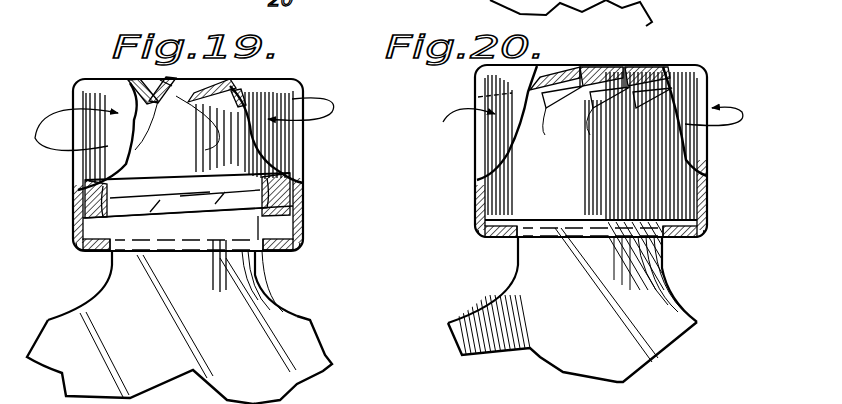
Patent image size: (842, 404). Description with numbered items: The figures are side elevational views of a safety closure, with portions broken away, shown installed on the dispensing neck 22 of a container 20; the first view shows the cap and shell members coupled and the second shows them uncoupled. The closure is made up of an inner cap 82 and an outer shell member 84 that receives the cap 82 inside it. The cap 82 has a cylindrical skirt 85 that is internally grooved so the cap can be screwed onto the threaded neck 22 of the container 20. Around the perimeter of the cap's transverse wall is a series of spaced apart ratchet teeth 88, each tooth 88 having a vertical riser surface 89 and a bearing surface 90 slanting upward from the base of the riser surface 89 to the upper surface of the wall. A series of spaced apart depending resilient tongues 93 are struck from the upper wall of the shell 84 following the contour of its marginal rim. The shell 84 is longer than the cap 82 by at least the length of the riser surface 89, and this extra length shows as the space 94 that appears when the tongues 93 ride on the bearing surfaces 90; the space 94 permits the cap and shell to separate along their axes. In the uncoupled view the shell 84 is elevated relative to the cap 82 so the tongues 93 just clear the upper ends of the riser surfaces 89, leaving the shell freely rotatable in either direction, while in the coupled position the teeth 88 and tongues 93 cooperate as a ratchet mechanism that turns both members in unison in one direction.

In FIG. 19, the container 20 is at (305, 367).
In FIG. 20, the container 20 is at (660, 334).
In FIG. 19, the dispensing neck 22 is at (124, 276).
In FIG. 20, the dispensing neck 22 is at (530, 262).
In FIG. 20, the inner cap 82 is at (522, 219).
In FIG. 19, the outer shell member 84 is at (74, 229).
In FIG. 20, the outer shell member 84 is at (708, 190).
In FIG. 19, the cylindrical skirt 85 is at (303, 192).
In FIG. 19, the ratchet teeth 88 is at (198, 137).
In FIG. 20, the ratchet teeth 88 is at (594, 108).
In FIG. 19, the vertical riser surface 89 is at (146, 77).
In FIG. 20, the vertical riser surface 89 is at (582, 132).
In FIG. 19, the bearing surface 90 is at (170, 98).
In FIG. 20, the bearing surface 90 is at (660, 66).
In FIG. 19, the resilient tongues 93 is at (212, 82).
In FIG. 20, the resilient tongues 93 is at (543, 72).
In FIG. 19, the space 94 is at (290, 233).